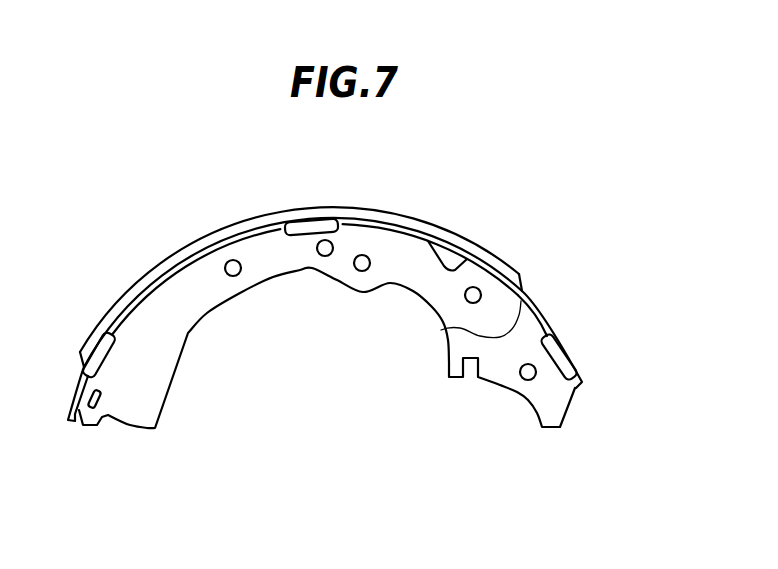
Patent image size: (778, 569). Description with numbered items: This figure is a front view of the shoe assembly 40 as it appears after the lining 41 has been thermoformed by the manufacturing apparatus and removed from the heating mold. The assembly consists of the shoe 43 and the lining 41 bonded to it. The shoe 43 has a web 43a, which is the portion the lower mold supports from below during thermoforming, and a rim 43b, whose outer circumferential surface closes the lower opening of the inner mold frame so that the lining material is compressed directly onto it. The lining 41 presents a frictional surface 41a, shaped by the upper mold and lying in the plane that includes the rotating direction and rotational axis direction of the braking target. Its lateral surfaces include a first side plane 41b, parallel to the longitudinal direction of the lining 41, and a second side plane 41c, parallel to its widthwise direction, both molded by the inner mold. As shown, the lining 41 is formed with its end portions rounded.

The shoe assembly 40 is at (413, 184).
The lining 41 is at (618, 167).
The frictional surface 41a is at (453, 226).
The first side plane 41b is at (474, 250).
The second side plane 41c is at (526, 288).
The shoe 43 is at (356, 337).
The web 43a is at (443, 308).
The rim 43b is at (441, 330).